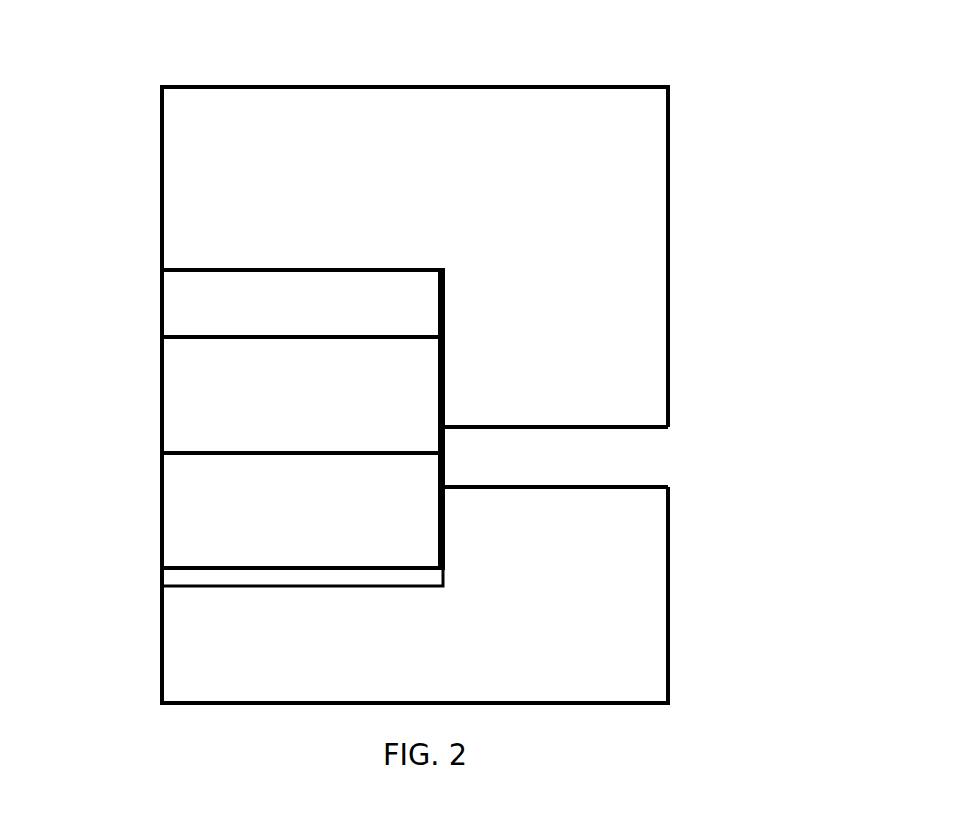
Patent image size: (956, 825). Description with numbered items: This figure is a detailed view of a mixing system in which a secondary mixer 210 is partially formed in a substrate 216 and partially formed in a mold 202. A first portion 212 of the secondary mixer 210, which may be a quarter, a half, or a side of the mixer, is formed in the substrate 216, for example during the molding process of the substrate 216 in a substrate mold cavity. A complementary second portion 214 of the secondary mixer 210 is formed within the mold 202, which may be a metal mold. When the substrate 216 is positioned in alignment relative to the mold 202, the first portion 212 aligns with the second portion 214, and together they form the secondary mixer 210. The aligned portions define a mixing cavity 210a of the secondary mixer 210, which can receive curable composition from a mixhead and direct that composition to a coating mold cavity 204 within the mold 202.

The mold 202 is at (463, 595).
The coating mold cavity 204 is at (621, 437).
The secondary mixer 210 is at (345, 192).
The mixing cavity 210a is at (615, 420).
The first portion 212 is at (243, 383).
The second portion 214 is at (245, 486).
The substrate 216 is at (415, 215).